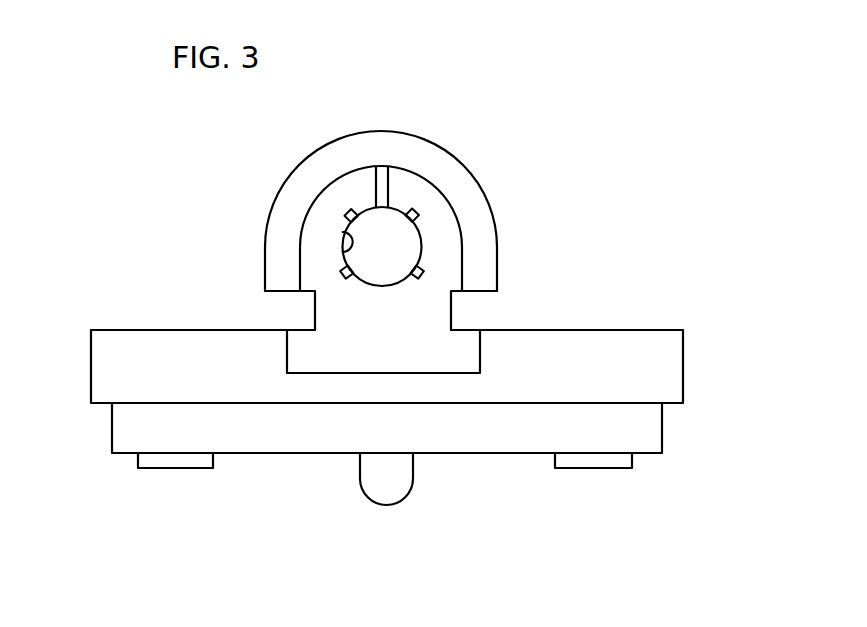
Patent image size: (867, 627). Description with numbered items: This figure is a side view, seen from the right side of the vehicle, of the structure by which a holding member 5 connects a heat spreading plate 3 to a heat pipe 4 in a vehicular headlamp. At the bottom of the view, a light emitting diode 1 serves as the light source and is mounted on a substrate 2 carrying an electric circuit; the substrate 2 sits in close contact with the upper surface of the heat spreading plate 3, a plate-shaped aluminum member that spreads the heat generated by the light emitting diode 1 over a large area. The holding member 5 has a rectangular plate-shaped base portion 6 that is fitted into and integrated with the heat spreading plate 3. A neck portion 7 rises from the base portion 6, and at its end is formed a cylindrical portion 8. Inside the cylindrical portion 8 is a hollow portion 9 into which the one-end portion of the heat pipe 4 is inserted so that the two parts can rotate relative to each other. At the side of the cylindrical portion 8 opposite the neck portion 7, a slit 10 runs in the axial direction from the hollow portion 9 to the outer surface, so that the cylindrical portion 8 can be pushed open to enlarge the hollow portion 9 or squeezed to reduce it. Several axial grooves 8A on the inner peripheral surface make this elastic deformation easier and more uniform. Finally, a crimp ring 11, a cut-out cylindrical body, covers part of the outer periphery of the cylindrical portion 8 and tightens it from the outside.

The light emitting diode 1 is at (383, 505).
The substrate 2 is at (118, 435).
The heat spreading plate 3 is at (683, 363).
The heat pipe 4 is at (397, 248).
The holding member 5 is at (469, 105).
The base portion 6 is at (298, 365).
The neck portion 7 is at (333, 305).
The cylindrical portion 8 is at (318, 213).
The grooves 8A is at (350, 276).
The hollow portion 9 is at (344, 254).
The slit 10 is at (381, 175).
The crimp ring 11 is at (480, 180).